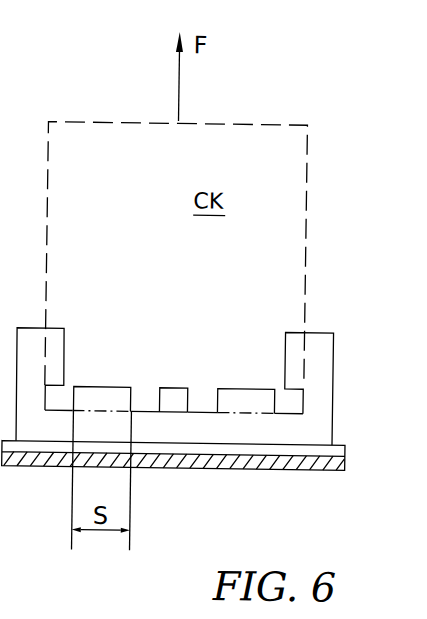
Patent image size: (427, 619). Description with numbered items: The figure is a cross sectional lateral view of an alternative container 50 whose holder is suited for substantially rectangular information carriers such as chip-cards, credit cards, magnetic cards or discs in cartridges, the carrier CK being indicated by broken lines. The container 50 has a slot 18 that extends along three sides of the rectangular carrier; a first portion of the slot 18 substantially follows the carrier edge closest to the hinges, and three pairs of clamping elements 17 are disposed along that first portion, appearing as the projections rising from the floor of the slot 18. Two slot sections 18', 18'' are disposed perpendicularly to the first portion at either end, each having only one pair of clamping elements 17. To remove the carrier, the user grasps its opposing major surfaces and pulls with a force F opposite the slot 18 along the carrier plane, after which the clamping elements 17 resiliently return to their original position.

The clamping elements 17 is at (54, 355).
The slot 18 is at (196, 378).
The slot section 18' is at (64, 359).
The slot section 18'' is at (280, 369).
The container 50 is at (349, 490).